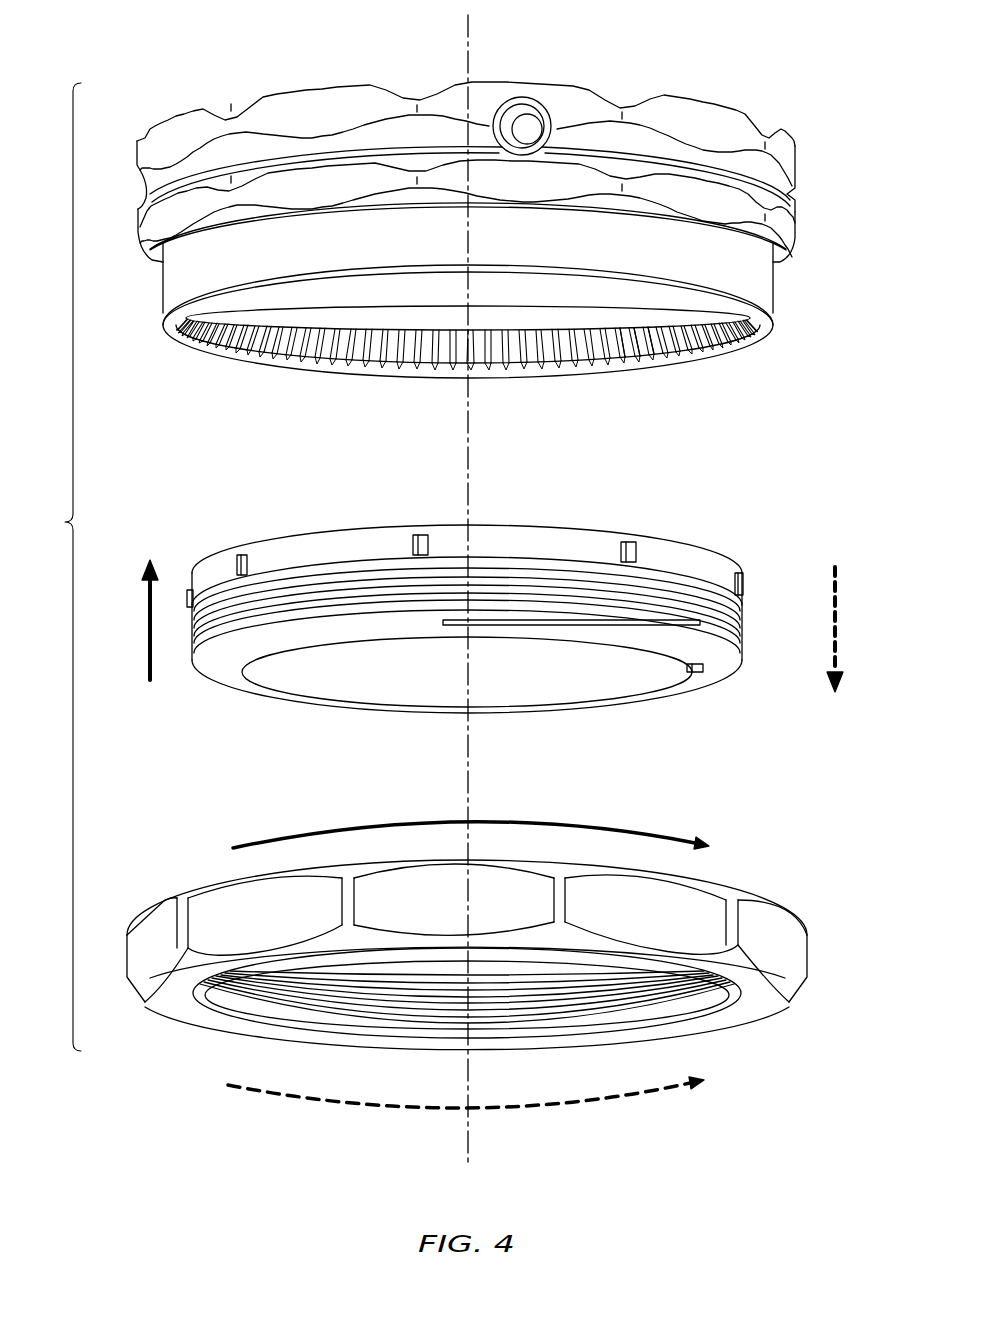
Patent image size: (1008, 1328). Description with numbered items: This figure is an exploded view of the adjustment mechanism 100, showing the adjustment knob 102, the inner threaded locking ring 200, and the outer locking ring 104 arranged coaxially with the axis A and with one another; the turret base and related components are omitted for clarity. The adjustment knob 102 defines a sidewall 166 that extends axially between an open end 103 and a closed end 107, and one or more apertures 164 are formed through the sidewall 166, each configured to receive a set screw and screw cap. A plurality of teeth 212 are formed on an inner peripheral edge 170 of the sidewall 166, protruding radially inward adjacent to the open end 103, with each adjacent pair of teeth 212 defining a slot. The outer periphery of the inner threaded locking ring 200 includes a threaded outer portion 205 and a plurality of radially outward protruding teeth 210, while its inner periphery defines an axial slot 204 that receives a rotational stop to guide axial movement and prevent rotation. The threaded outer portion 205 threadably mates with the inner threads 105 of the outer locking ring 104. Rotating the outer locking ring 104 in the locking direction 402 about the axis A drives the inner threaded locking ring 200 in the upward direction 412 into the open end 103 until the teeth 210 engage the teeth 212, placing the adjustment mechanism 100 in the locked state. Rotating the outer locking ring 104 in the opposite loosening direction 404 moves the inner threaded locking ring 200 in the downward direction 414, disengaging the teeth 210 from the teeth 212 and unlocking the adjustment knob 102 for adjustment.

The adjustment mechanism 100 is at (53, 567).
The adjustment knob 102 is at (487, 211).
The open end 103 is at (757, 328).
The outer locking ring 104 is at (467, 914).
The inner threads 105 is at (580, 1005).
The closed end 107 is at (755, 120).
The aperture 164 is at (523, 96).
The sidewall 166 is at (716, 138).
The inner peripheral edge 170 is at (207, 342).
The inner threaded locking ring 200 is at (476, 590).
The axial slot 204 is at (700, 675).
The threaded outer portion 205 is at (747, 600).
The teeth 210 is at (420, 548).
The teeth 212 is at (658, 357).
The locking direction 402 is at (323, 826).
The loosening direction 404 is at (348, 1108).
The upward direction 412 is at (148, 637).
The downward direction 414 is at (838, 598).
The axis A is at (468, 1128).